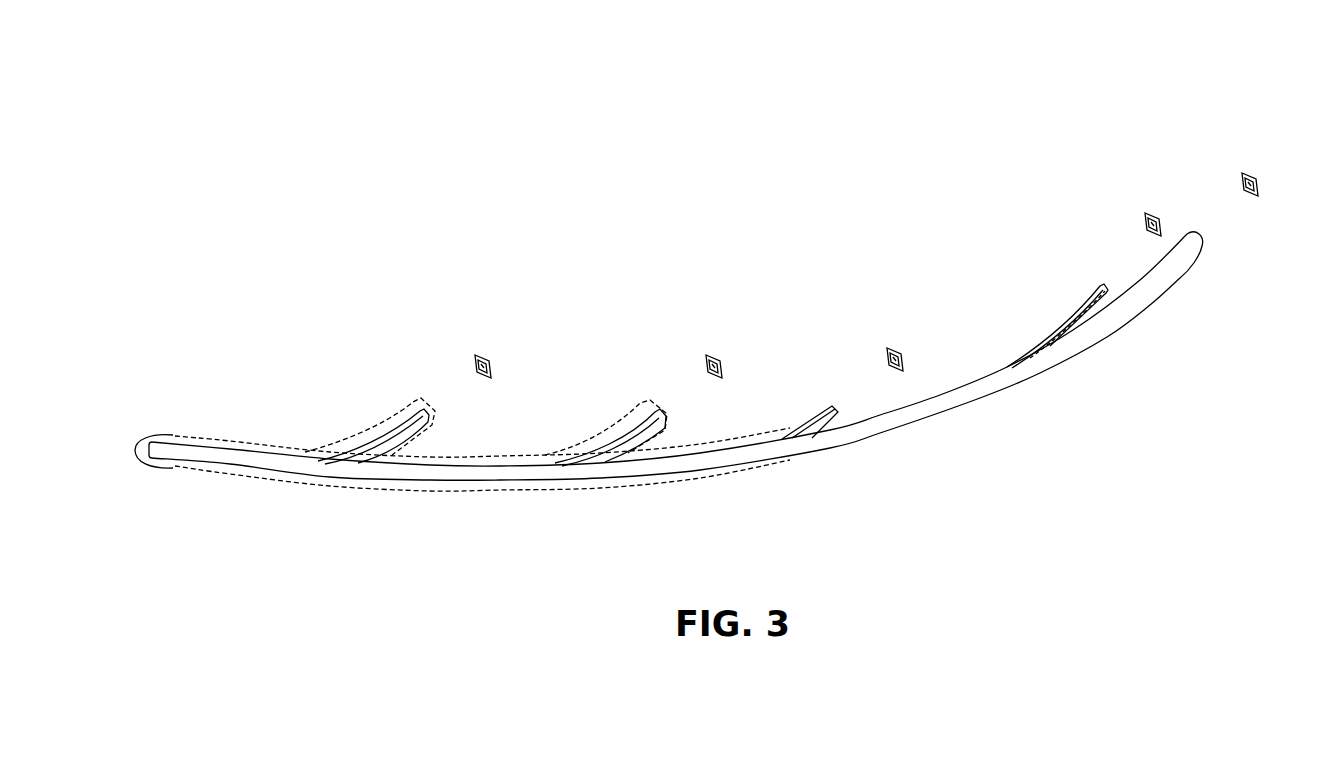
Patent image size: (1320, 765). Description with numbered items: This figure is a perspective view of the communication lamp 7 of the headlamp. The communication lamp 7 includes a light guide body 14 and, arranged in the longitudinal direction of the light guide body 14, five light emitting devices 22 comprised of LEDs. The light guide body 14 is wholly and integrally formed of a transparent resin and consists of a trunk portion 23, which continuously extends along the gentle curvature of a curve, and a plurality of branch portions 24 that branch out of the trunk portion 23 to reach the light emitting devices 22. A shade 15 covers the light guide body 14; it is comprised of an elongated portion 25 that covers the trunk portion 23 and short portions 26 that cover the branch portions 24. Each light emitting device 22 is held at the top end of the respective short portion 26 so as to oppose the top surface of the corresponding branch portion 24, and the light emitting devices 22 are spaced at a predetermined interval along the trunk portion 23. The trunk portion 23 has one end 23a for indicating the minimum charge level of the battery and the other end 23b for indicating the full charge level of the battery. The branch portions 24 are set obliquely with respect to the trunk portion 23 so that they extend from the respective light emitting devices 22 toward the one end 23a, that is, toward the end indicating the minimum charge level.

The communication lamp 7 is at (797, 253).
The light guide body 14 is at (961, 410).
The shade 15 is at (236, 438).
The light emitting devices 22 is at (433, 410).
The trunk portion 23 is at (518, 478).
The one end 23a is at (162, 456).
The other end 23b is at (1196, 247).
The branch portions 24 is at (401, 420).
The elongated portion 25 is at (722, 480).
The short portions 26 is at (357, 439).